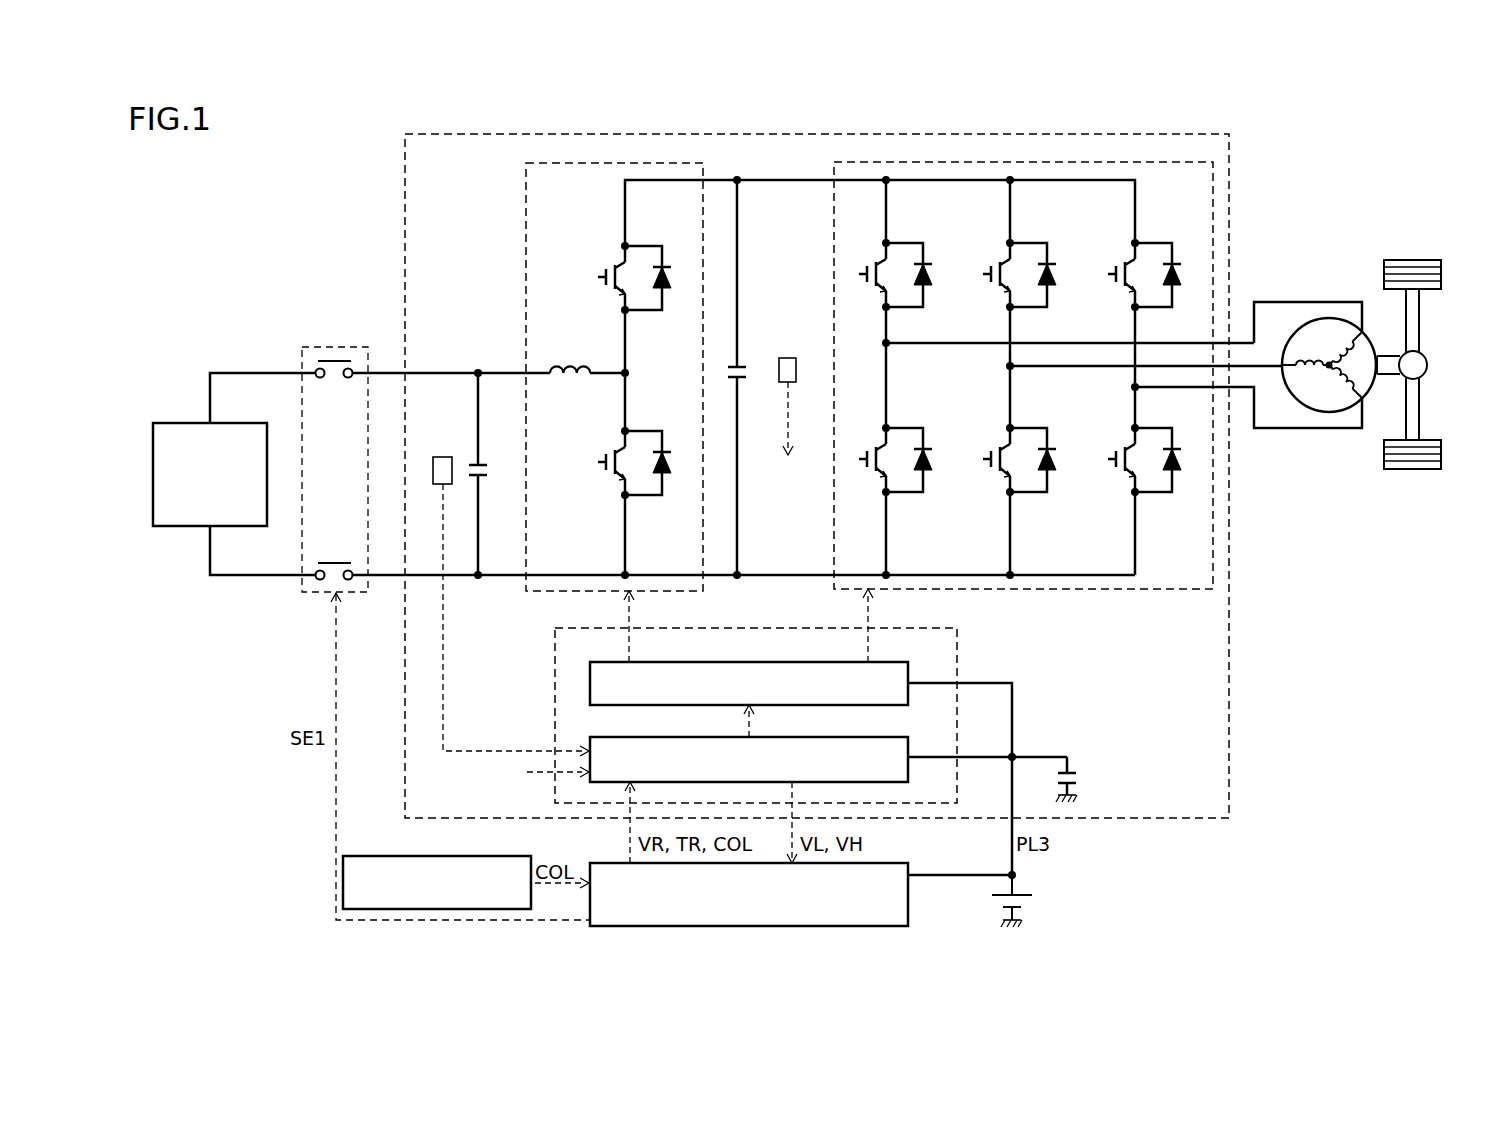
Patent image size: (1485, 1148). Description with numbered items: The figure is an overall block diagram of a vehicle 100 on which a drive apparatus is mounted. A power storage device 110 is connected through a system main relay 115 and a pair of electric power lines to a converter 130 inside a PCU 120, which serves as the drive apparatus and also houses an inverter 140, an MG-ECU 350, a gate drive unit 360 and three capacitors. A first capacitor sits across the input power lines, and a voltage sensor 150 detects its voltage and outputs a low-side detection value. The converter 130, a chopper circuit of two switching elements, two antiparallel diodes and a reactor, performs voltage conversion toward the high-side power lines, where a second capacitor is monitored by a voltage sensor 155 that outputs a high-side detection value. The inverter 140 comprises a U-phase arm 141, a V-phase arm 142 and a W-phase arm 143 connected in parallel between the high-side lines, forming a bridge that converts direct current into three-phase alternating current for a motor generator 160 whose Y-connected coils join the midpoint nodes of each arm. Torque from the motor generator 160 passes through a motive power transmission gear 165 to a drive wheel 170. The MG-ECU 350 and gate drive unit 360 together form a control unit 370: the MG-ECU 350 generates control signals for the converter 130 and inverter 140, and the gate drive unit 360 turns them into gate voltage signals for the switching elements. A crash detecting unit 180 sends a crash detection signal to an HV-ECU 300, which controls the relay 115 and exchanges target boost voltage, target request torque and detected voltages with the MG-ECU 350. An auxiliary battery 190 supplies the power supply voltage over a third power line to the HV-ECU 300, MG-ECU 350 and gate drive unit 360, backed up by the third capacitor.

The vehicle 100 is at (1347, 154).
The power storage device 110 is at (224, 423).
The system main relay 115 is at (366, 347).
The PCU 120 is at (1230, 158).
The converter 130 is at (605, 163).
The inverter 140 is at (1088, 162).
The U-phase arm 141 is at (935, 220).
The V-phase arm 142 is at (1060, 220).
The W-phase arm 143 is at (1185, 220).
The voltage sensor 150 is at (442, 457).
The voltage sensor 155 is at (788, 358).
The motor generator 160 is at (1330, 318).
The motive power transmission gear 165 is at (1400, 356).
The drive wheel 170 is at (1424, 260).
The crash detecting unit 180 is at (440, 857).
The auxiliary battery 190 is at (1028, 893).
The HV-ECU 300 is at (888, 863).
The MG-ECU 350 is at (888, 737).
The gate drive unit 360 is at (888, 662).
The control unit 370 is at (940, 628).